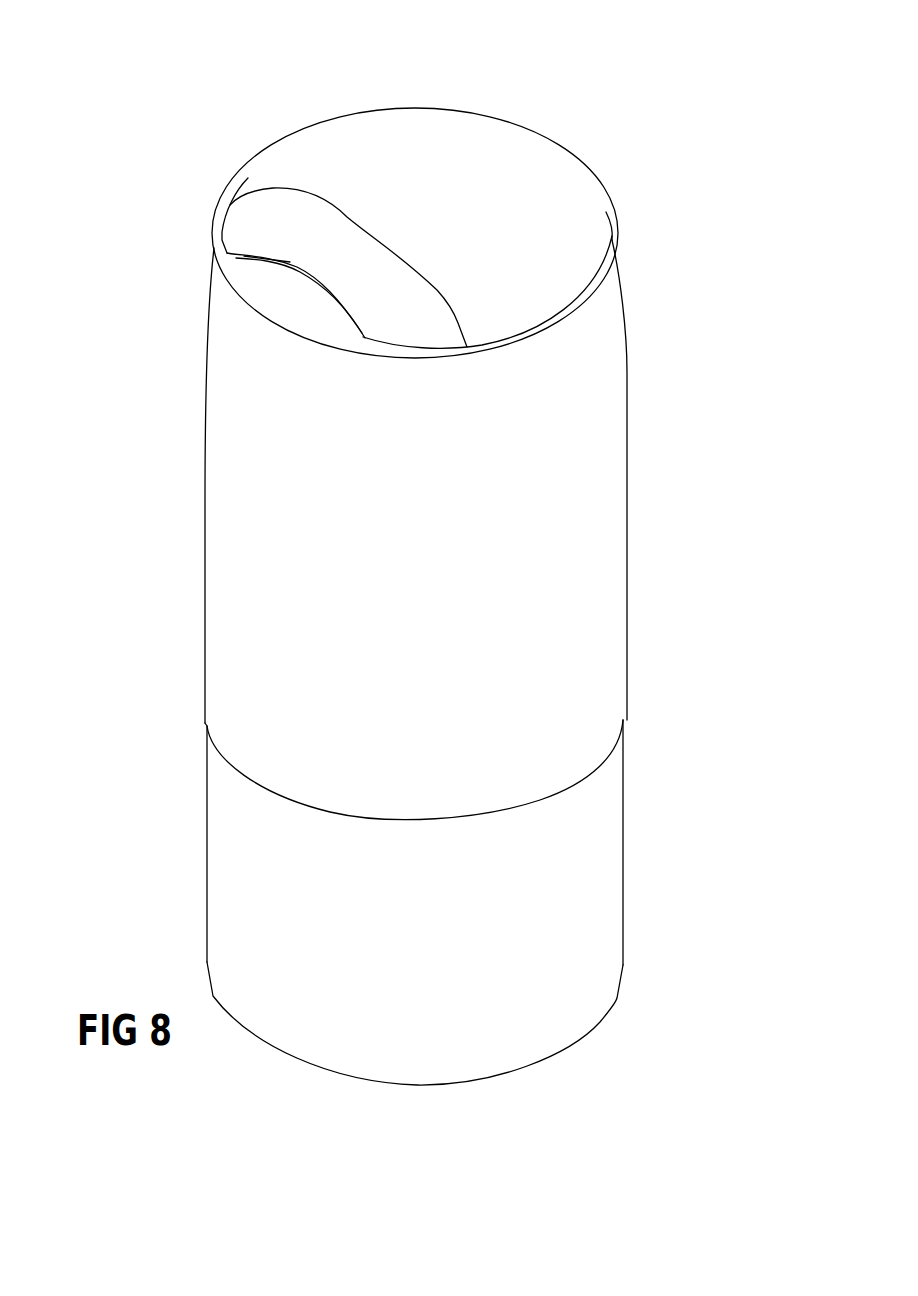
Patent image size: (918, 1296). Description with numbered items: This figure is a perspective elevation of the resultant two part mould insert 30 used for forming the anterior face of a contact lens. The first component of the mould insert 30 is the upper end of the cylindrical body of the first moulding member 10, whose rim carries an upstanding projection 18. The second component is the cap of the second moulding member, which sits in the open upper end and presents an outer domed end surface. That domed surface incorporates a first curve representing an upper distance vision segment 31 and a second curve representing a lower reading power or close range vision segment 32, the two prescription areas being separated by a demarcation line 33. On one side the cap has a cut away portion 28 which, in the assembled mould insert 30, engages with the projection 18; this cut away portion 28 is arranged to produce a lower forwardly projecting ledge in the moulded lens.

The first moulding member 10 is at (542, 547).
The upstanding projection 18 is at (283, 300).
The cut away portion 28 is at (217, 257).
The mould insert 30 is at (204, 533).
The distance vision segment 31 is at (570, 228).
The close range vision segment 32 is at (307, 247).
The demarcation line 33 is at (288, 190).